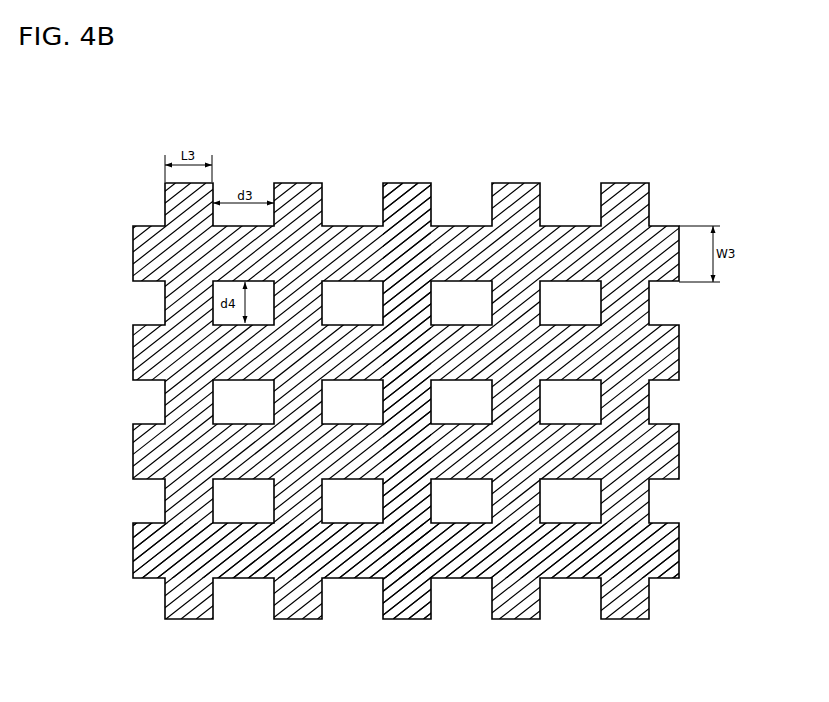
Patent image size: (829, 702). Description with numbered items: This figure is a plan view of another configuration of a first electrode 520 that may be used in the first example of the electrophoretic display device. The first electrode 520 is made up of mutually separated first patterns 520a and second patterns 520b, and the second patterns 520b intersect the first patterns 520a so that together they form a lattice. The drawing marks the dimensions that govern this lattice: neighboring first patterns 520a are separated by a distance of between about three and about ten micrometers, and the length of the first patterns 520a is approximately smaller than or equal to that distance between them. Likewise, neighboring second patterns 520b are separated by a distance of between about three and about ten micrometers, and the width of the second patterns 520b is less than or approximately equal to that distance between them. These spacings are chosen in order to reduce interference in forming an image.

The first electrode 520 is at (629, 157).
The first patterns 520a is at (407, 610).
The second patterns 520b is at (572, 563).